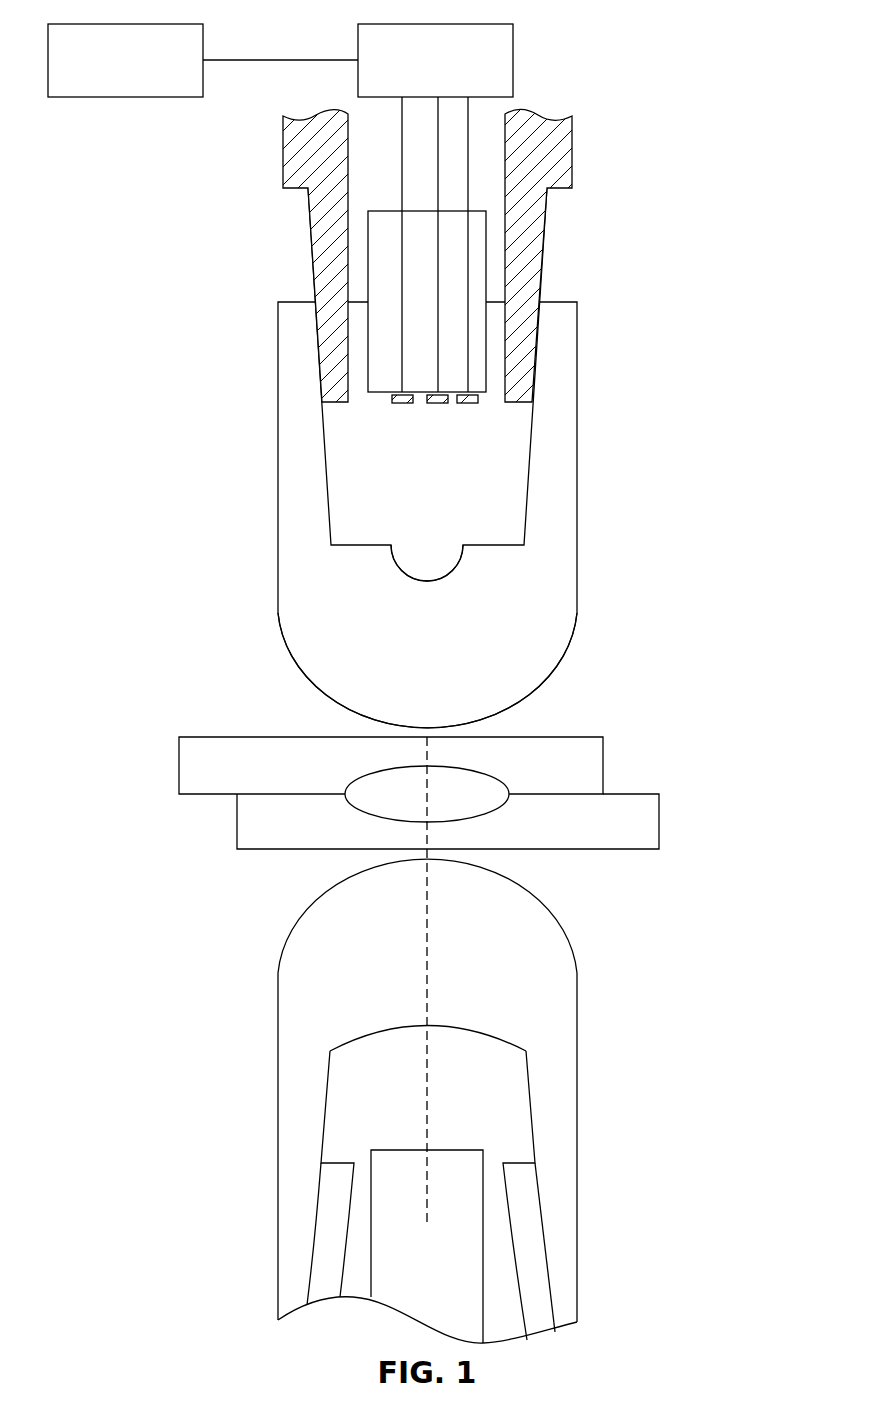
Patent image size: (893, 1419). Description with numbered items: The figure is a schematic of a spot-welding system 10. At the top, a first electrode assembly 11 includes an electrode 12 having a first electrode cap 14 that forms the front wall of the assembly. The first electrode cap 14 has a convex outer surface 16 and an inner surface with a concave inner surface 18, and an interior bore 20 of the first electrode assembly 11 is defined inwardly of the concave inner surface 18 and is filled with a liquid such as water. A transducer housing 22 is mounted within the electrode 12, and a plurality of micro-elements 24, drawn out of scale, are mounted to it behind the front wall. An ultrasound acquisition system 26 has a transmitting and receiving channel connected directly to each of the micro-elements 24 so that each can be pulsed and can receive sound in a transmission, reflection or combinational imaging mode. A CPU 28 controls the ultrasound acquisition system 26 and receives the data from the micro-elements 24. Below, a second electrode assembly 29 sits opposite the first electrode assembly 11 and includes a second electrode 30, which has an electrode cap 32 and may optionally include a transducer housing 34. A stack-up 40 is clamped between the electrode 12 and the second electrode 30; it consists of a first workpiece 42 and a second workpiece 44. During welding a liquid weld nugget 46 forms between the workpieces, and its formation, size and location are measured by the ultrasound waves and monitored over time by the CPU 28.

The spot-welding system 10 is at (692, 40).
The first electrode assembly 11 is at (154, 173).
The electrode 12 is at (542, 258).
The first electrode cap 14 is at (577, 435).
The convex outer surface 16 is at (530, 705).
The concave inner surface 18 is at (418, 580).
The interior bore 20 is at (352, 486).
The transducer housing 22 is at (368, 283).
The micro-elements 24 is at (402, 403).
The ultrasound acquisition system 26 is at (513, 60).
The CPU 28 is at (127, 97).
The second electrode assembly 29 is at (154, 852).
The second electrode 30 is at (547, 1273).
The electrode cap 32 is at (577, 1037).
The transducer housing 34 is at (487, 1237).
The stack-up 40 is at (154, 737).
The first workpiece 42 is at (603, 765).
The second workpiece 44 is at (659, 822).
The liquid weld nugget 46 is at (378, 772).